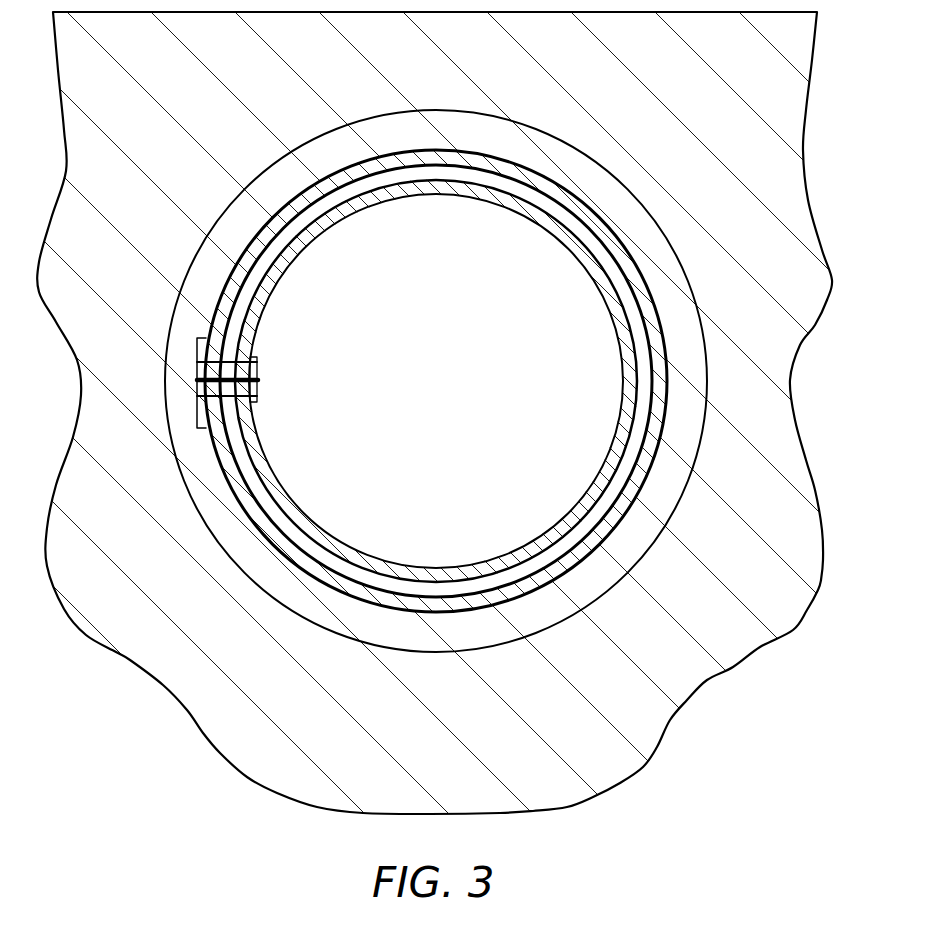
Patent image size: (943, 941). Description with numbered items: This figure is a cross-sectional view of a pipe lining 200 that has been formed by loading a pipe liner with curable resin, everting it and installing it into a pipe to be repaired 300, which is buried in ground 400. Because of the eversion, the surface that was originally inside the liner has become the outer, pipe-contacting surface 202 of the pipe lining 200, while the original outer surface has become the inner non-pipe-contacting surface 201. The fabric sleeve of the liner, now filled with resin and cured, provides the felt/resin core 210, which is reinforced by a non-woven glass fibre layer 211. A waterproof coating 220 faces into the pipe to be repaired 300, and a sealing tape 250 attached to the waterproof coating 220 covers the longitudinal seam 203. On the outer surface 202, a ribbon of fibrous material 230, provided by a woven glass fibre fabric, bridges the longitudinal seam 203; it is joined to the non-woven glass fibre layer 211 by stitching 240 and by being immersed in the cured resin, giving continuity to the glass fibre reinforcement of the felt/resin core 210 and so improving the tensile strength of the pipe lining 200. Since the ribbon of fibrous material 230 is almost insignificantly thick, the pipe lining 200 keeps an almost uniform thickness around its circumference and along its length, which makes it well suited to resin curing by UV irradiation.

The pipe lining 200 is at (442, 361).
The inner non-pipe-contacting surface 201 is at (612, 322).
The outer pipe-contacting surface 202 is at (565, 182).
The longitudinal seam 203 is at (258, 381).
The felt/resin core 210 is at (623, 252).
The non-woven glass fibre layer 211 is at (628, 483).
The waterproof coating 220 is at (520, 205).
The ribbon of fibrous material 230 is at (197, 408).
The stitching 240 is at (257, 362).
The sealing tape 250 is at (257, 357).
The pipe to be repaired 300 is at (467, 122).
The ground 400 is at (738, 84).